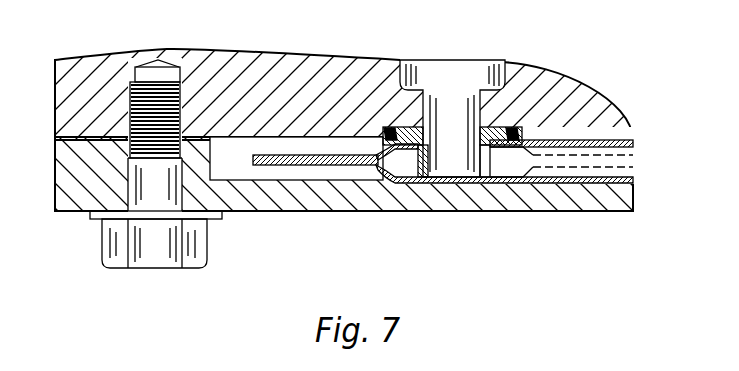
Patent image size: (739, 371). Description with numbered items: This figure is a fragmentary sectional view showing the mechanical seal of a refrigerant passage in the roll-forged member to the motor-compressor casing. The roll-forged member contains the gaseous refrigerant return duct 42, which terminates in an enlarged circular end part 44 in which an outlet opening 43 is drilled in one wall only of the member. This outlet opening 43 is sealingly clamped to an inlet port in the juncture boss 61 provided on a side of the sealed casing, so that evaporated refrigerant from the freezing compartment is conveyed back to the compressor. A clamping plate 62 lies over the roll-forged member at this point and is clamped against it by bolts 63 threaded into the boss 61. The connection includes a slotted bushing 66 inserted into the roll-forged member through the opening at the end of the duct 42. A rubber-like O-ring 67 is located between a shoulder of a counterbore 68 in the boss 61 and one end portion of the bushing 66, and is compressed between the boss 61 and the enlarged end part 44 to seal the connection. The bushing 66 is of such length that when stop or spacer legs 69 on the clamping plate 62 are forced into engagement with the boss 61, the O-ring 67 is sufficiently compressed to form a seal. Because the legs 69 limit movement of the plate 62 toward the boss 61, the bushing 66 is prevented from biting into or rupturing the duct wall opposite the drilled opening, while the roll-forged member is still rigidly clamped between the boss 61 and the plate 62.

The juncture boss 61 is at (203, 72).
The clamping plate 62 is at (81, 203).
The bolt 63 is at (173, 253).
The stop or spacer leg 69 is at (210, 163).
The enlarged circular end part 44 is at (380, 175).
The O-ring 67 is at (385, 127).
The counterbore 68 is at (524, 130).
The slotted bushing 66 is at (431, 160).
The gaseous refrigerant return duct 42 is at (593, 172).
The outlet opening 43 is at (436, 152).